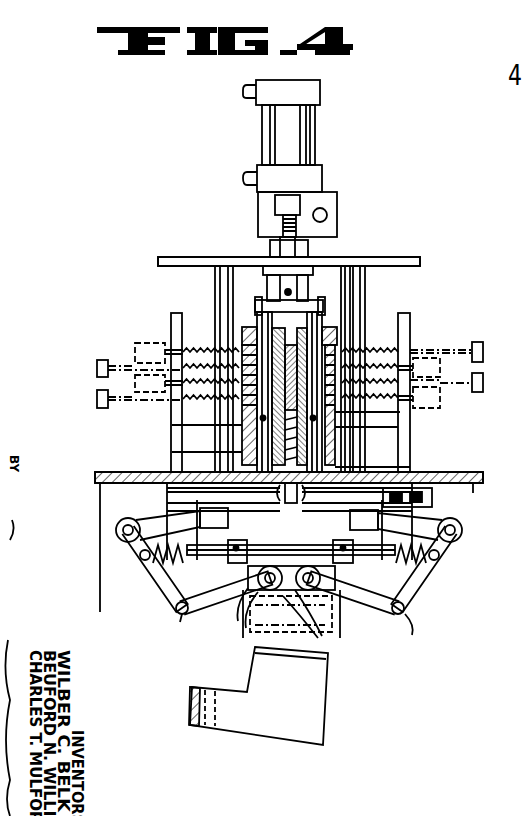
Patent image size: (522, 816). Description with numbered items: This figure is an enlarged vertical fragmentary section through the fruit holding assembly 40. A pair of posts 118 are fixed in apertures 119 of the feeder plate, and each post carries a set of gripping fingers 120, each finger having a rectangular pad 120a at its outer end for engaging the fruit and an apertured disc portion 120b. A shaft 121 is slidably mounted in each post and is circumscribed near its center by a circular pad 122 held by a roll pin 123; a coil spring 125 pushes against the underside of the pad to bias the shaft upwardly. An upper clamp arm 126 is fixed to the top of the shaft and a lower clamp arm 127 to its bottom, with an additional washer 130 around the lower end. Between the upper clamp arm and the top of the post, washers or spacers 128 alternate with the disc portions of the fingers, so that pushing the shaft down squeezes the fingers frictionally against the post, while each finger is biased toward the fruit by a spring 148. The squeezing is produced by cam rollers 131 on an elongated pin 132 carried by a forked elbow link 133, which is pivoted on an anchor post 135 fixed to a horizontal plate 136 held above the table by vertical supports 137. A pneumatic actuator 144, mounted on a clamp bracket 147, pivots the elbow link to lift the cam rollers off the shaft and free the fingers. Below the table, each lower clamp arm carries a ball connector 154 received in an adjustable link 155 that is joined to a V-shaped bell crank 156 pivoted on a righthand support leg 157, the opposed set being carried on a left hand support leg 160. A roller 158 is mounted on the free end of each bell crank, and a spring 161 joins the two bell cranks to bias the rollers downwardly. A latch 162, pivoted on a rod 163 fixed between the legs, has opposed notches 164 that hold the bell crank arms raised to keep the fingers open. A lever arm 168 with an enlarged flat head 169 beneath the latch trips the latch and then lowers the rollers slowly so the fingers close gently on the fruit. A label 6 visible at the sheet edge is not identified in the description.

The fruit holding assembly 40 is at (405, 185).
The pneumatic actuator 144 is at (300, 118).
The clamp bracket 147 is at (320, 190).
The horizontal plate 136 is at (327, 240).
The anchor post 135 is at (273, 288).
The forked elbow link 133 is at (300, 266).
The vertical supports 137 is at (420, 262).
The cam rollers 131 is at (305, 280).
The elongated pin 132 is at (242, 327).
The shaft 121 is at (250, 300).
The circular pad 122 is at (340, 437).
The roll pin 123 is at (335, 413).
The upper clamp arm 126 is at (242, 335).
The spring 148 is at (408, 333).
The washers or spacers 128 is at (217, 350).
The posts 118 is at (257, 424).
The coil spring 125 is at (242, 452).
The rectangular pad 120a is at (135, 348).
The gripping fingers 120 is at (97, 398).
The apertured disc portion 120b is at (363, 363).
The base 6 is at (400, 470).
The apertures 119 is at (420, 487).
The lower clamp arm 127 is at (215, 490).
The additional washer 130 is at (335, 505).
The ball connector 154 is at (120, 528).
The adjustable link 155 is at (125, 540).
The spring 161 is at (130, 565).
The rod 163 is at (175, 586).
The V-shaped bell crank 156 is at (165, 608).
The left hand support leg 160 is at (180, 622).
The righthand support leg 157 is at (412, 625).
The opposed notches 164 is at (238, 598).
The latch 162 is at (243, 627).
The roller 158 is at (340, 642).
The enlarged flat head 169 is at (277, 613).
The lever arm 168 is at (215, 726).